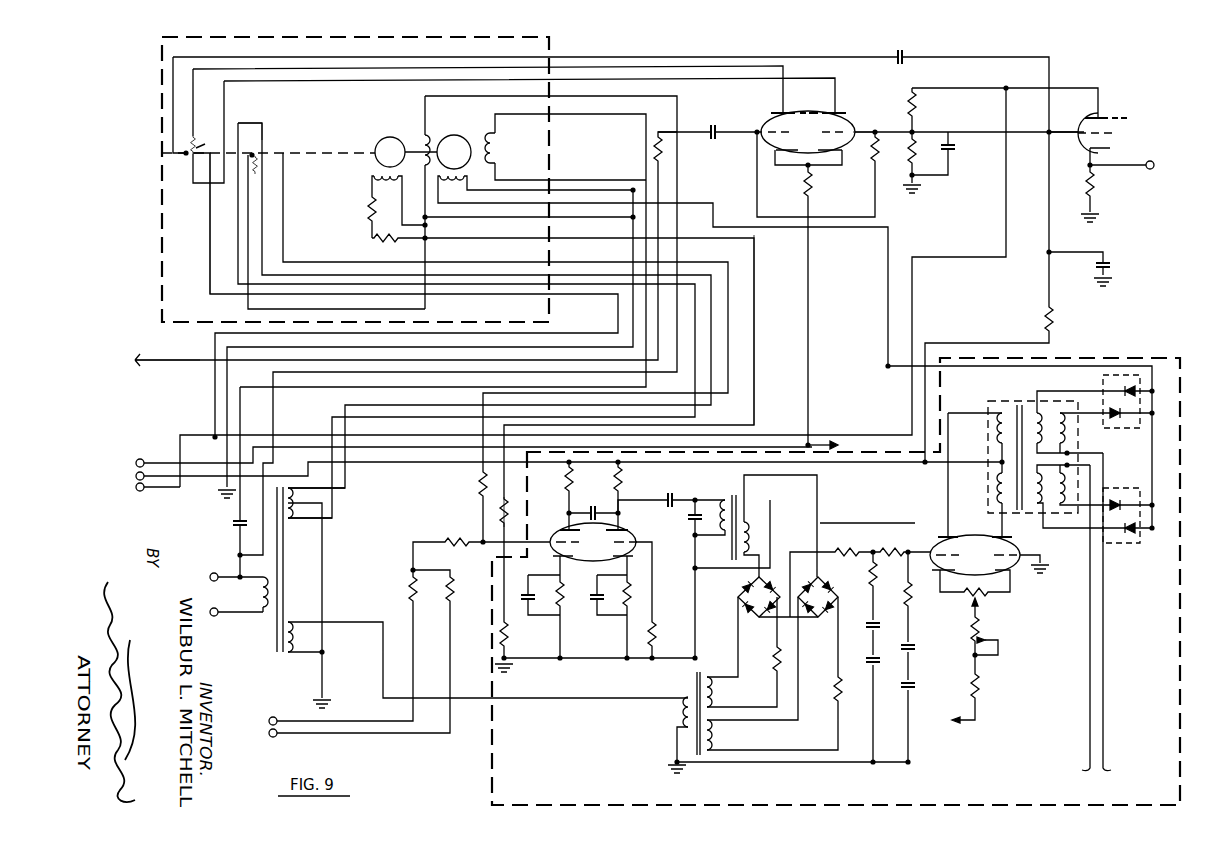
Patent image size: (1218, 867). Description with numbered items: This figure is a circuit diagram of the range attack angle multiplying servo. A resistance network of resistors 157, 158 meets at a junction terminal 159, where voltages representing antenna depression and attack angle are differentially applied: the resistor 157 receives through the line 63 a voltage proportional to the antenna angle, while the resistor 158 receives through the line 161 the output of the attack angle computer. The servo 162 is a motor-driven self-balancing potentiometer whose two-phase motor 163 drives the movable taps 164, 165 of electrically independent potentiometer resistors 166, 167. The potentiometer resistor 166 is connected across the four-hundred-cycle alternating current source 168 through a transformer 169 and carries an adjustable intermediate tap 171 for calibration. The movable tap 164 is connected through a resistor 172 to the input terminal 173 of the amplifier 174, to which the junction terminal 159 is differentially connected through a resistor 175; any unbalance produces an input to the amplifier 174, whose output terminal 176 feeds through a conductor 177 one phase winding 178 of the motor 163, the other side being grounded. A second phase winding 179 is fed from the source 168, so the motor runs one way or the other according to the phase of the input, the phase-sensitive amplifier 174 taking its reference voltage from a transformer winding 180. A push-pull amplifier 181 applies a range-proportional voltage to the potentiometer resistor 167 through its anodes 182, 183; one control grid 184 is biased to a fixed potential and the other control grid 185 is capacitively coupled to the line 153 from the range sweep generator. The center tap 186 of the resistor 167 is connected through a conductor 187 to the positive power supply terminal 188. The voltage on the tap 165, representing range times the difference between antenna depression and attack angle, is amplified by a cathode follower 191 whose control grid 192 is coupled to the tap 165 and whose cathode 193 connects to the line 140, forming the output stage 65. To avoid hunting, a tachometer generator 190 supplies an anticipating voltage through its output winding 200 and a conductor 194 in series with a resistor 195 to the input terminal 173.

The servo 162 is at (165, 265).
The movable tap 165 is at (186, 150).
The potentiometer resistor 167 is at (195, 136).
The potentiometer resistor 166 is at (258, 150).
The movable tap 164 is at (262, 152).
The center tap 186 is at (202, 156).
The adjustable intermediate tap 171 is at (250, 160).
The conductor 187 is at (210, 266).
The tachometer generator 190 is at (390, 137).
The two-phase motor 163 is at (456, 135).
The second phase winding 179 is at (492, 152).
The output winding 200 is at (372, 192).
The phase winding 178 is at (451, 180).
The push-pull amplifier 181 is at (808, 125).
The anode 182 is at (782, 112).
The anode 183 is at (836, 112).
The control grid 185 is at (775, 130).
The control grid 184 is at (845, 130).
The conductor 177 is at (826, 225).
The conductor 194 is at (757, 245).
The output terminal 176 is at (886, 367).
The cathode follower 191 is at (1107, 110).
The control grid 192 is at (1112, 130).
The cathode 193 is at (1093, 150).
The line 140 is at (1133, 152).
The cathode follower stage 65 is at (1114, 165).
The line 153 is at (198, 362).
The positive power supply terminal 188 is at (141, 491).
The transformer winding 180 is at (300, 637).
The 400-cycle alternating current source 168 is at (236, 609).
The transformer 169 is at (265, 615).
The line 63 is at (275, 716).
The line 161 is at (375, 733).
The resistor 157 is at (410, 575).
The resistor 158 is at (452, 598).
The junction terminal 159 is at (414, 572).
The resistor 175 is at (443, 537).
The input terminal 173 is at (482, 545).
The resistor 172 is at (480, 486).
The resistor 195 is at (500, 508).
The amplifier 174 is at (525, 766).